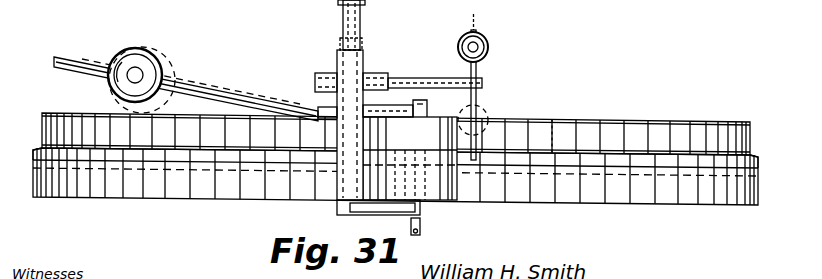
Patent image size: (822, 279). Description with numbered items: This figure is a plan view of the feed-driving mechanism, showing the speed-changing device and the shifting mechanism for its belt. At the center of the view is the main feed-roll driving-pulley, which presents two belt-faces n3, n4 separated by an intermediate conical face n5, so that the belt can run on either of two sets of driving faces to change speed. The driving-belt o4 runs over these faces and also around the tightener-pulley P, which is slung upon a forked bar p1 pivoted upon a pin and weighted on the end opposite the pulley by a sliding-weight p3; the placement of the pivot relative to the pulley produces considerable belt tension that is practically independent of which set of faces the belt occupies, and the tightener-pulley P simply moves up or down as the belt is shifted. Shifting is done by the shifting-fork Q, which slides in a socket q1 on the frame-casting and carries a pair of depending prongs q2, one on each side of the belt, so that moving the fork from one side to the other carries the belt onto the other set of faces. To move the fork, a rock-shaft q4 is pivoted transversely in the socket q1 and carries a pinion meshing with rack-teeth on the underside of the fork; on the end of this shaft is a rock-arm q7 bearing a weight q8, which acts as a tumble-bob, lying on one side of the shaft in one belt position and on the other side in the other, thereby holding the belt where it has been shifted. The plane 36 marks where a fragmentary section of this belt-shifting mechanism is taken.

The belt-face n3 is at (82, 113).
The belt-face n4 is at (164, 194).
The conical face n5 is at (42, 150).
The driving-belt o4 is at (566, 130).
The forked bar p1 is at (222, 92).
The sliding-weight p3 is at (152, 62).
The shifting-fork Q is at (355, 30).
The socket q1 is at (343, 66).
The depending prongs q2 is at (340, 120).
The rock-shaft q4 is at (415, 78).
The rock-arm q7 is at (480, 107).
The weight q8 is at (488, 45).
The tightener-pulley P is at (427, 118).
The plane 36 is at (362, 231).